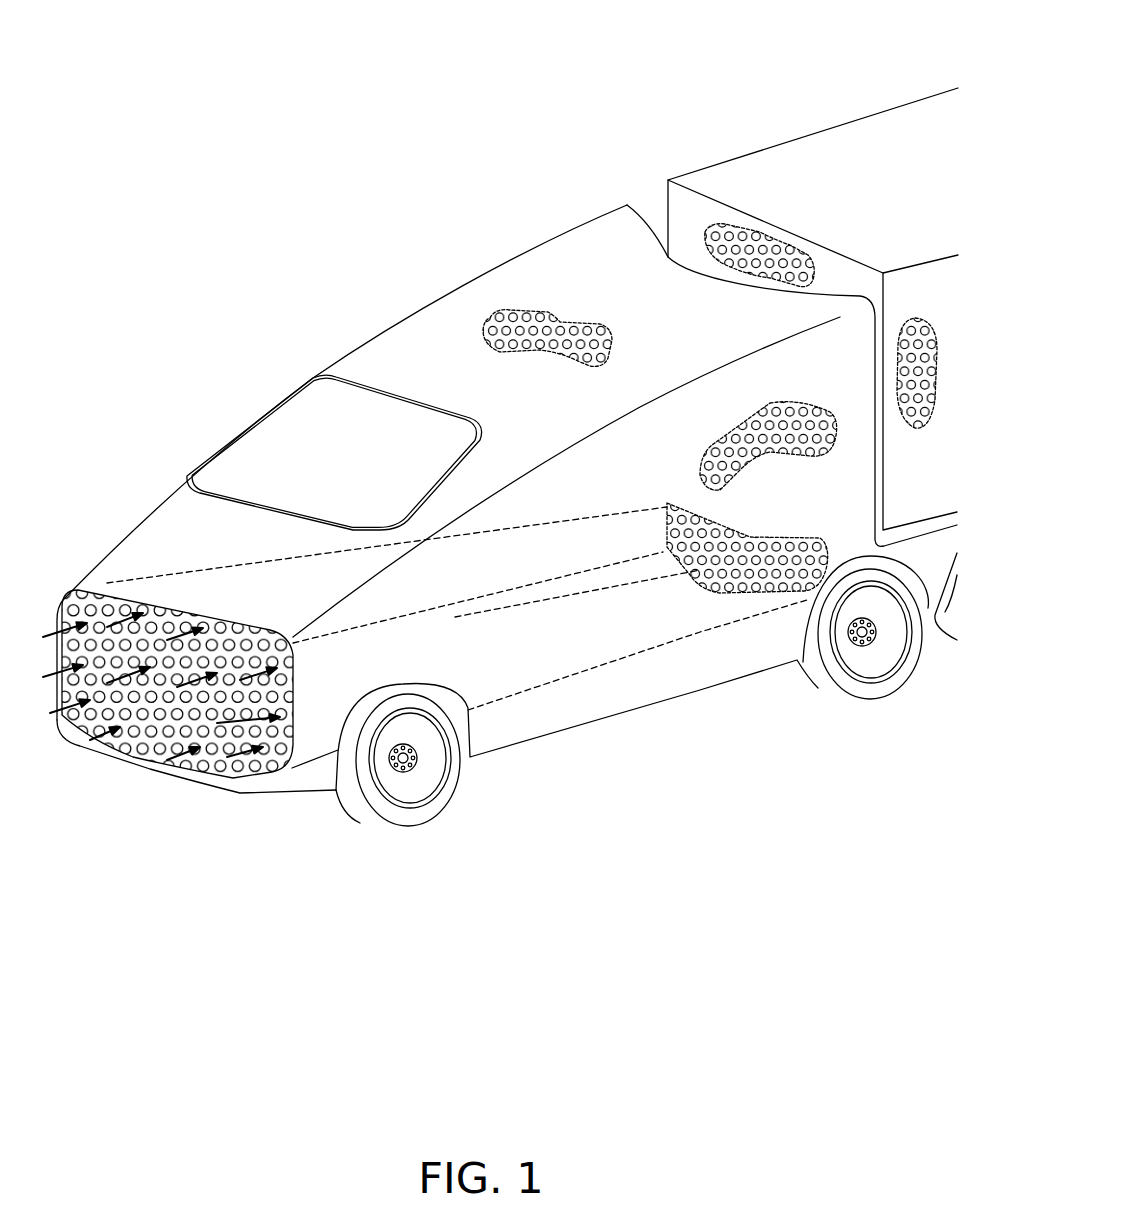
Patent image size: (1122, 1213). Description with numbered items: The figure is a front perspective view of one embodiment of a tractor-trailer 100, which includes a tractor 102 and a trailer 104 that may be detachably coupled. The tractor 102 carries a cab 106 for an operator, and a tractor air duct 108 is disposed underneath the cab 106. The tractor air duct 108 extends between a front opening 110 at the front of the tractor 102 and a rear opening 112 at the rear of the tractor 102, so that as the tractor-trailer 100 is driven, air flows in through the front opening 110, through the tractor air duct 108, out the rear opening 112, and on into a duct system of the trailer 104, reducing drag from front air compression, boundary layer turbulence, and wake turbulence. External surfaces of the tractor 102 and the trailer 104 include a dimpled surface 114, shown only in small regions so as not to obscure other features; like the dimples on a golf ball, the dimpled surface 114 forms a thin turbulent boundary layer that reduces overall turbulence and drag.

The tractor-trailer 100 is at (230, 150).
The tractor 102 is at (47, 510).
The trailer 104 is at (633, 137).
The cab 106 is at (173, 487).
The tractor air duct 108 is at (603, 513).
The front opening 110 is at (277, 630).
The rear opening 112 is at (803, 540).
The dimpled surface 114 is at (557, 317).